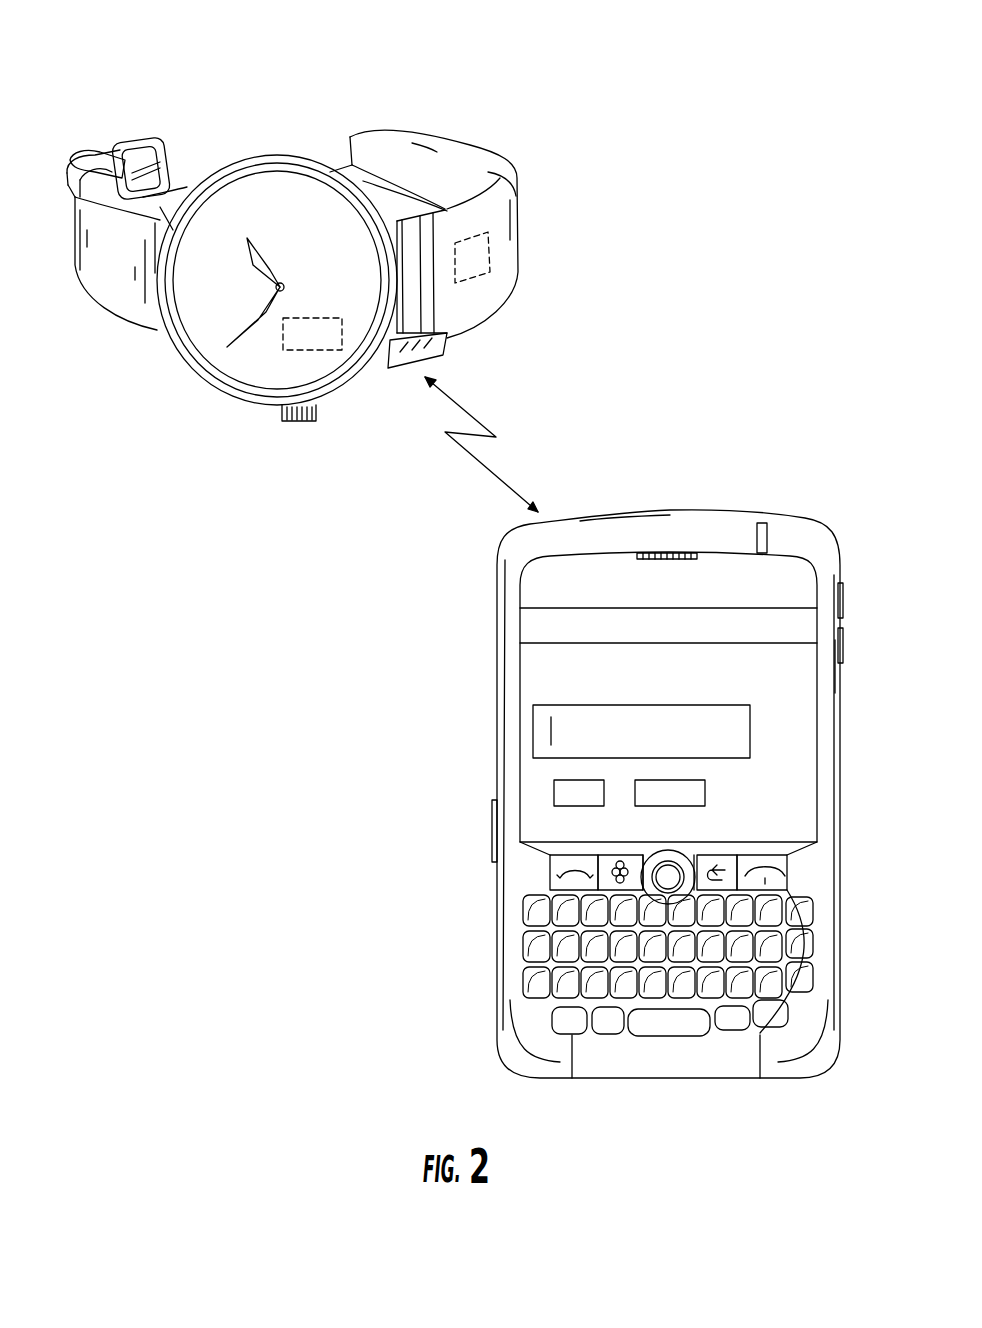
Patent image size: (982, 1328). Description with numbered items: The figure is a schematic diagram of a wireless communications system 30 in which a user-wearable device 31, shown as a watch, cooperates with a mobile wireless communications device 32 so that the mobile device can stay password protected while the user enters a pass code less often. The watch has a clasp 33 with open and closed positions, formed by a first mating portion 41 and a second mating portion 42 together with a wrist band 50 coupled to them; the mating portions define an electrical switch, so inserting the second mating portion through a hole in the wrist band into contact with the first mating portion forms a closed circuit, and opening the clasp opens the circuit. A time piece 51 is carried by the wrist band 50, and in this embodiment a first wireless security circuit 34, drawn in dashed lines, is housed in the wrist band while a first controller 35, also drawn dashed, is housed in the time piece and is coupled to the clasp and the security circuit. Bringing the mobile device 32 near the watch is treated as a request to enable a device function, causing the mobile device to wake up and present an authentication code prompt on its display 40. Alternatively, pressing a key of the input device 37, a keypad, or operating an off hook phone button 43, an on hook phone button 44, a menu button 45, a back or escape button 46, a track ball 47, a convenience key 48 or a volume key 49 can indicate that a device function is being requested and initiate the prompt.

The wireless communications system 30 is at (706, 128).
The user-wearable device 31 is at (528, 161).
The mobile wireless communications device 32 is at (456, 1013).
The clasp 33 is at (56, 127).
The first wireless security circuit 34 is at (478, 283).
The first controller 35 is at (313, 350).
The input device 37 is at (812, 928).
The display 40 is at (520, 657).
The first mating portion 41 is at (141, 140).
The second mating portion 42 is at (168, 160).
The off hook phone button 43 is at (562, 878).
The on hook phone button 44 is at (778, 855).
The menu button 45 is at (612, 862).
The back or escape button 46 is at (733, 855).
The track ball 47 is at (682, 851).
The convenience key 48 is at (492, 822).
The volume key 49 is at (842, 642).
The wrist band 50 is at (73, 162).
The time piece 51 is at (200, 378).